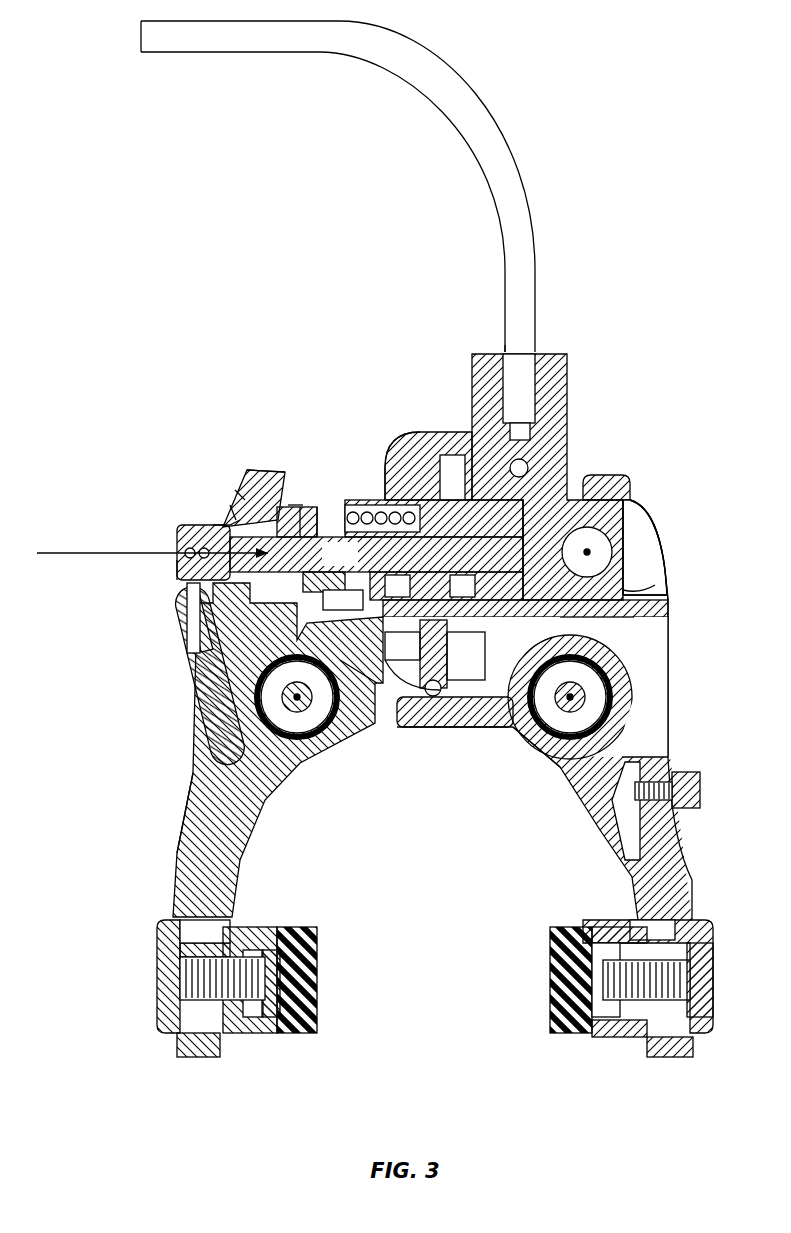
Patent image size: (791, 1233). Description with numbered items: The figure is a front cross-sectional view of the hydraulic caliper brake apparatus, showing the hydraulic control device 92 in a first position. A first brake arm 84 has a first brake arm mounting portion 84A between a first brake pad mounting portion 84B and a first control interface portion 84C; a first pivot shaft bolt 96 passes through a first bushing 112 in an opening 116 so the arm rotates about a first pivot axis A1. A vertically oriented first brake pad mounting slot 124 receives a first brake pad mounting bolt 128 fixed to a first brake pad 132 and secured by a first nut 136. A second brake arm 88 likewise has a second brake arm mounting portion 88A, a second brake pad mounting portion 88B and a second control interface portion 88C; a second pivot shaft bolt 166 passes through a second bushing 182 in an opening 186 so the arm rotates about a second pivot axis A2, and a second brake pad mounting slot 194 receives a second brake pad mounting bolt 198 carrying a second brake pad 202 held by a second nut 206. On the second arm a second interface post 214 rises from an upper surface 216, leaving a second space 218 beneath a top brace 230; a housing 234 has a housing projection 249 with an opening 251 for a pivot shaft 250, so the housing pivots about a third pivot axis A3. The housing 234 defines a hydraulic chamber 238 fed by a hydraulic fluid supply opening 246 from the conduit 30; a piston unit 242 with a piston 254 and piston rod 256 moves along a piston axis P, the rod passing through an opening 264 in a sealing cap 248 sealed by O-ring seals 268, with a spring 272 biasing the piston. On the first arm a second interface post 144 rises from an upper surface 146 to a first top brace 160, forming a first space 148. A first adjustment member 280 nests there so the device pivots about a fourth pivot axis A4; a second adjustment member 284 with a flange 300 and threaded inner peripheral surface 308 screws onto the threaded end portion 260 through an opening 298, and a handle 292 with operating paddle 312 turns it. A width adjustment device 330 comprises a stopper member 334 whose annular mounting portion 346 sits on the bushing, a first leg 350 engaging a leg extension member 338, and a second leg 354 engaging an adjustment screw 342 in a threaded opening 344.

The conduit 30 is at (462, 87).
The hydraulic fluid supply opening 246 is at (505, 350).
The hydraulic control device 92 is at (388, 400).
The housing 234 is at (553, 384).
The opening 298 is at (300, 505).
The hydraulic chamber 238 is at (462, 500).
The piston unit 242 is at (481, 523).
The piston 254 is at (527, 527).
The first top brace 160 is at (250, 477).
The threaded end portion 260 is at (273, 483).
The flange 300 is at (297, 513).
The opening 264 is at (308, 513).
The spring 272 is at (407, 500).
The O-ring seals 268 is at (350, 482).
The sealing cap 248 is at (323, 530).
The housing projection 249 is at (576, 500).
The top brace 230 is at (595, 482).
The pivot shaft 250 is at (615, 515).
The opening 251 is at (632, 540).
The second interface post 214 is at (640, 555).
The second control interface portion 88C is at (650, 538).
The second space 218 is at (637, 562).
The upper surface 216 is at (650, 583).
The third pivot axis A3 is at (660, 607).
The second brake arm mounting portion 88A is at (650, 647).
The annular mounting portion 346 is at (628, 670).
The second pivot shaft bolt 166 is at (580, 688).
The second bushing 182 is at (607, 713).
The opening 186 is at (607, 725).
The threaded opening 344 is at (700, 775).
The adjustment screw 342 is at (700, 794).
The second brake arm 88 is at (703, 832).
The first adjustment member 280 is at (237, 493).
The fourth pivot axis A4 is at (233, 513).
The first control interface portion 84C is at (230, 520).
The second interface post 144 is at (212, 535).
The first space 148 is at (180, 547).
The second adjustment member 284 is at (177, 541).
The piston axis P is at (143, 553).
The threaded inner peripheral surface 308 is at (177, 568).
The upper surface 146 is at (188, 593).
The handle 292 is at (153, 648).
The first pivot axis A1 is at (297, 697).
The operating paddle 312 is at (155, 728).
The first brake arm mounting portion 84A is at (213, 770).
The first brake arm 84 is at (146, 830).
The first brake pad mounting slot 124 is at (205, 925).
The first brake pad mounting bolt 128 is at (207, 977).
The first nut 136 is at (160, 1020).
The first brake pad mounting portion 84B is at (178, 1058).
The first brake pad 132 is at (287, 1033).
The first bushing 112 is at (293, 725).
The opening 116 is at (325, 740).
The first pivot shaft bolt 96 is at (365, 737).
The leg extension member 338 is at (390, 723).
The first leg 350 is at (467, 717).
The width adjustment device 330 is at (437, 777).
The stopper member 334 is at (528, 762).
The second pivot axis A2 is at (570, 700).
The second leg 354 is at (607, 800).
The second brake pad 202 is at (567, 938).
The second brake pad mounting slot 194 is at (672, 930).
The second brake pad mounting bolt 198 is at (660, 977).
The second nut 206 is at (712, 1013).
The second brake pad mounting portion 88B is at (672, 1055).
The piston rod 256 is at (376, 554).